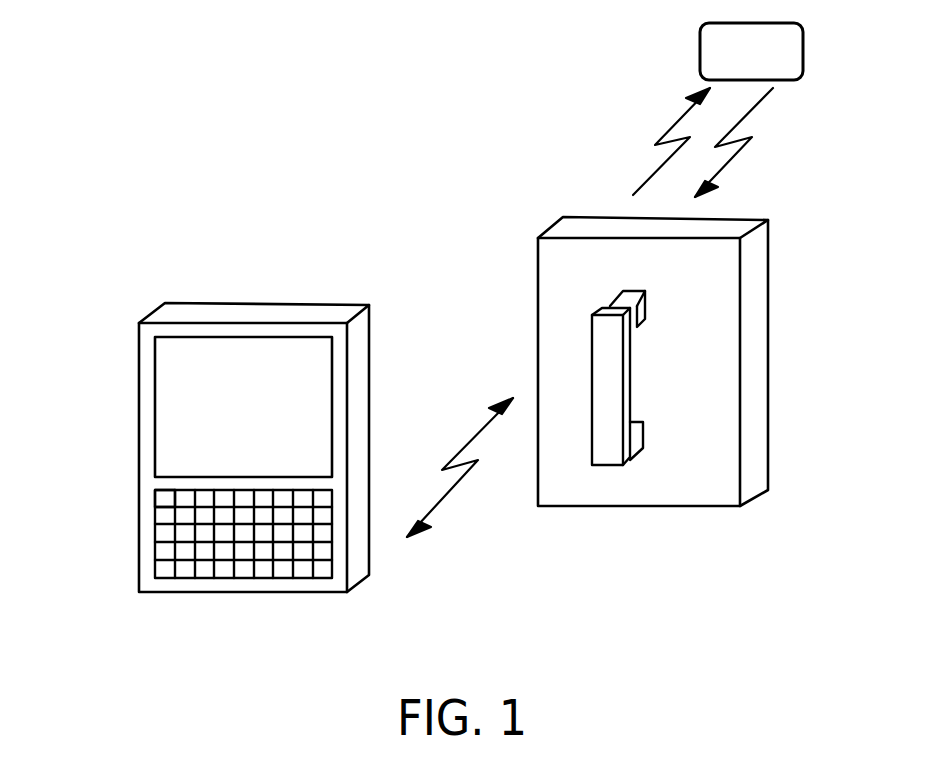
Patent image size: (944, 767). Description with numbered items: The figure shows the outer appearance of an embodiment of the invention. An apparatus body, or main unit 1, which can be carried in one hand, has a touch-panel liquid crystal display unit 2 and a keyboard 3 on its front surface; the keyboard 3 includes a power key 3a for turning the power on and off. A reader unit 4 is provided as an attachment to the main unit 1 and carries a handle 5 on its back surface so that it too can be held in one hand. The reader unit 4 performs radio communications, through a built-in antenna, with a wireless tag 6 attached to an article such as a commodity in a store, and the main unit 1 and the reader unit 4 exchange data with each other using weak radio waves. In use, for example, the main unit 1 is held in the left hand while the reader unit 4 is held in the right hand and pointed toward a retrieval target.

The apparatus body 1 is at (322, 305).
The touch-panel liquid crystal display unit 2 is at (155, 383).
The keyboard 3 is at (152, 532).
The power key 3a is at (167, 497).
The reader unit 4 is at (673, 506).
The handle 5 is at (592, 362).
The wireless tag 6 is at (803, 50).